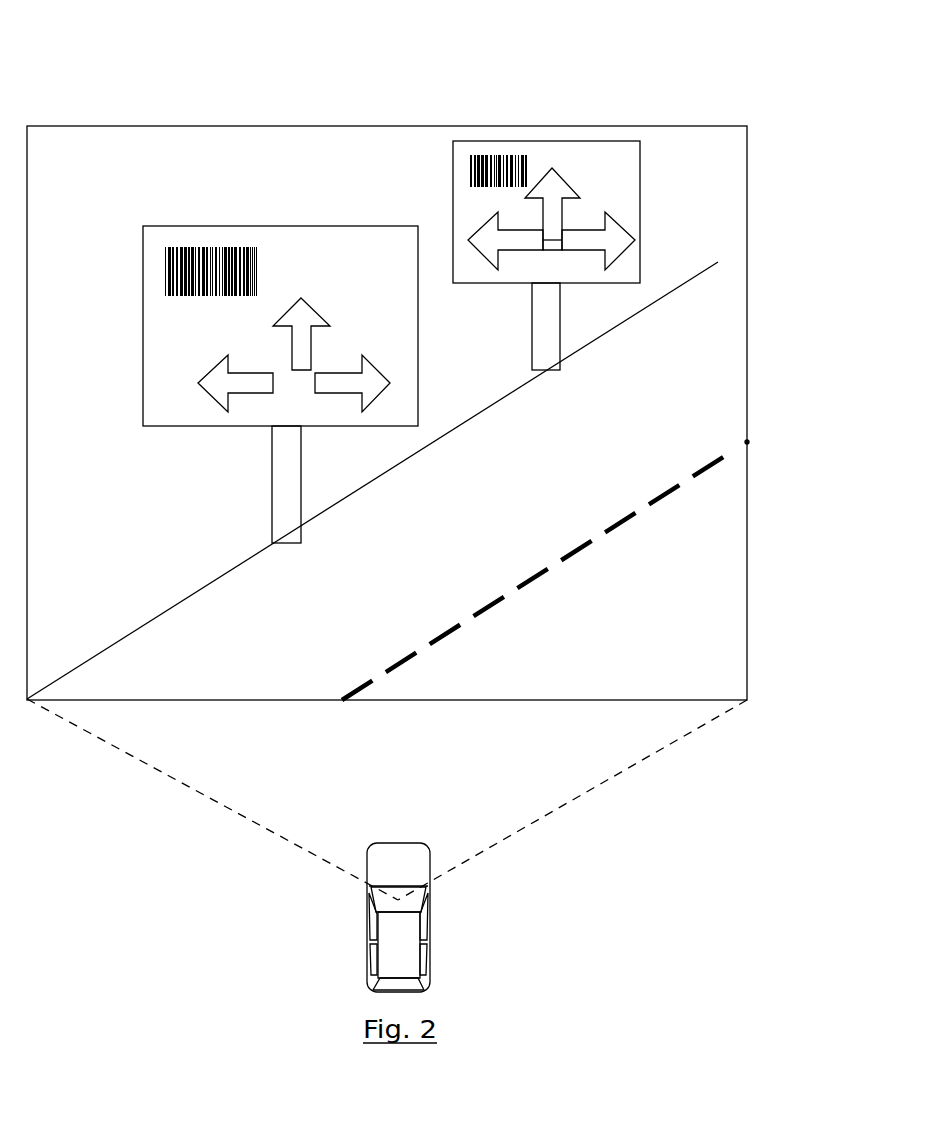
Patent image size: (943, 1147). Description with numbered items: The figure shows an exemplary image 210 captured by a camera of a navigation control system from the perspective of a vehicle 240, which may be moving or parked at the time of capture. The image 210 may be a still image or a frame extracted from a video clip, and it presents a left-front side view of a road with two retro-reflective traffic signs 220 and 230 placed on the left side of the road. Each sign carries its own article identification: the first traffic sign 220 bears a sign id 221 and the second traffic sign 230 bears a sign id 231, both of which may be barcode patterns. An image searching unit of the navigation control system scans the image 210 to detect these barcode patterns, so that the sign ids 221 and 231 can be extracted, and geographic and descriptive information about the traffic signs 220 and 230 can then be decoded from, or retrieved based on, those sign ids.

The image 210 is at (388, 126).
The traffic sign 220 is at (252, 281).
The sign id 221 is at (257, 226).
The traffic sign 230 is at (536, 194).
The sign id 231 is at (479, 128).
The vehicle 240 is at (442, 917).